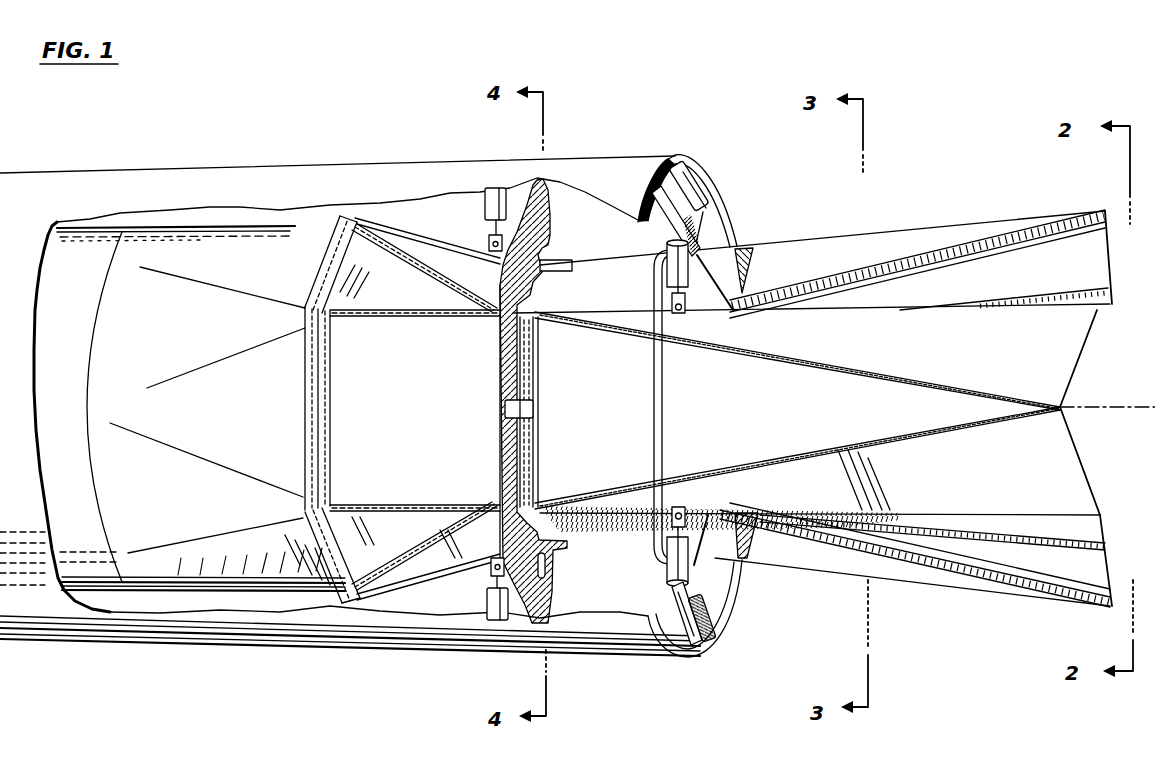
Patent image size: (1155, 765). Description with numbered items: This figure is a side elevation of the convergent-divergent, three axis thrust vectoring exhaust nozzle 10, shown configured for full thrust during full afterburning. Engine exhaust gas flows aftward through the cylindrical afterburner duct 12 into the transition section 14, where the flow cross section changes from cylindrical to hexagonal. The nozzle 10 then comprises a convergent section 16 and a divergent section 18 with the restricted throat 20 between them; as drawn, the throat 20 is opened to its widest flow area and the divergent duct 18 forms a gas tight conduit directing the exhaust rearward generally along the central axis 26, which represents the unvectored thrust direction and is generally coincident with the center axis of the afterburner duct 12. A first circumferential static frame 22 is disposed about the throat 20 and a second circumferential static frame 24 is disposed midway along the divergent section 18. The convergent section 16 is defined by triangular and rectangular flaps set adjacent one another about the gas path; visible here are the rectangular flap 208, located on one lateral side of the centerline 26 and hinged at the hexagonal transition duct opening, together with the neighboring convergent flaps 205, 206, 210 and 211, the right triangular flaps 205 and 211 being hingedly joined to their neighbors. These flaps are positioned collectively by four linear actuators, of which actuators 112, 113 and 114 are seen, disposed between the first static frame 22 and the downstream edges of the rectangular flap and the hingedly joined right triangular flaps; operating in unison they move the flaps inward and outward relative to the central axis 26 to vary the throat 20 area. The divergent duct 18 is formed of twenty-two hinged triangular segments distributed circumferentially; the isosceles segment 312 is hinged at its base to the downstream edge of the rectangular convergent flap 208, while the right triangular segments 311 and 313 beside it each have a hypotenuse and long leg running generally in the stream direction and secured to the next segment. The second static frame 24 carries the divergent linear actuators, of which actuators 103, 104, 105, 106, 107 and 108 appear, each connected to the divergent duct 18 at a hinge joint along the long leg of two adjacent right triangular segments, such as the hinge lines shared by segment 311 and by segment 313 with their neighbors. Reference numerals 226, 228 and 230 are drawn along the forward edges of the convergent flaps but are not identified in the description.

The exhaust nozzle 10 is at (1000, 99).
The cylindrical afterburner duct 12 is at (86, 242).
The transition section 14 is at (238, 248).
The convergent section 16 is at (428, 228).
The divergent section 18 is at (944, 219).
The restricted throat 20 is at (546, 276).
The first circumferential static frame 22 is at (542, 208).
The second circumferential static frame 24 is at (660, 255).
The central axis 26 is at (1105, 405).
The divergent linear actuator 103 is at (692, 172).
The divergent linear actuator 104 is at (660, 212).
The divergent linear actuator 105 is at (667, 281).
The divergent linear actuator 106 is at (668, 575).
The divergent linear actuator 107 is at (672, 600).
The divergent linear actuator 108 is at (706, 626).
The convergent linear actuator 112 is at (499, 186).
The convergent linear actuator 113 is at (505, 414).
The convergent linear actuator 114 is at (488, 602).
The right triangular convergent flap 205 is at (458, 260).
The convergent flap 206 is at (402, 299).
The rectangular convergent flap 208 is at (418, 416).
The convergent flap 210 is at (413, 532).
The right triangular convergent flap 211 is at (486, 556).
The upper edge beam 226 is at (328, 265).
The forward edge beam 228 is at (318, 403).
The lower edge beam 230 is at (318, 524).
The right triangular divergent segment 311 is at (921, 356).
The isosceles triangular divergent segment 312 is at (615, 417).
The right triangular divergent segment 313 is at (953, 482).